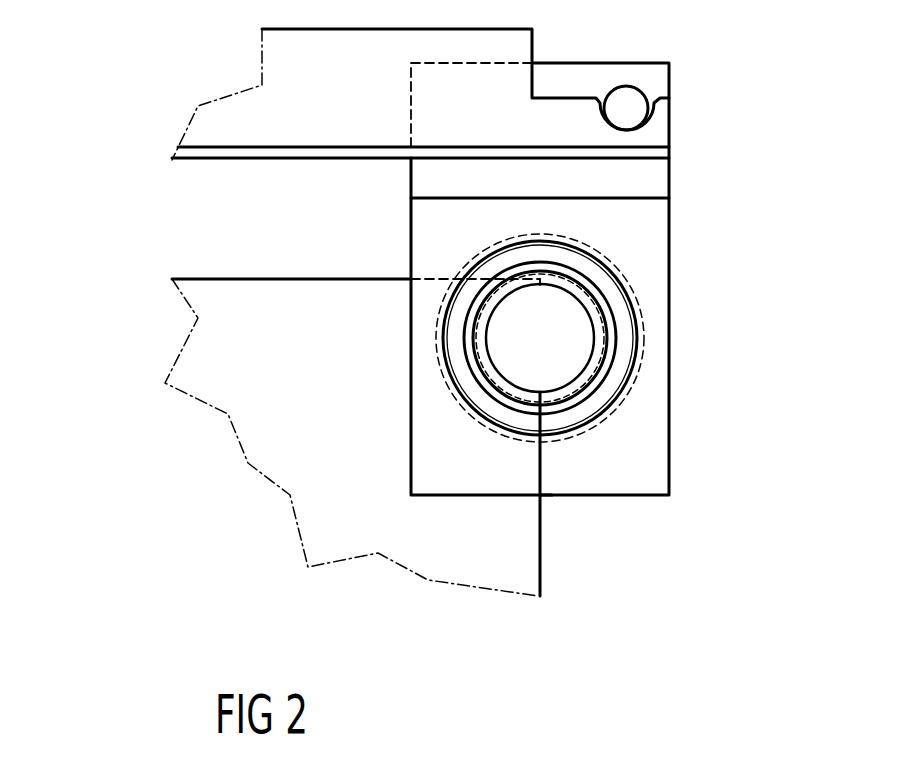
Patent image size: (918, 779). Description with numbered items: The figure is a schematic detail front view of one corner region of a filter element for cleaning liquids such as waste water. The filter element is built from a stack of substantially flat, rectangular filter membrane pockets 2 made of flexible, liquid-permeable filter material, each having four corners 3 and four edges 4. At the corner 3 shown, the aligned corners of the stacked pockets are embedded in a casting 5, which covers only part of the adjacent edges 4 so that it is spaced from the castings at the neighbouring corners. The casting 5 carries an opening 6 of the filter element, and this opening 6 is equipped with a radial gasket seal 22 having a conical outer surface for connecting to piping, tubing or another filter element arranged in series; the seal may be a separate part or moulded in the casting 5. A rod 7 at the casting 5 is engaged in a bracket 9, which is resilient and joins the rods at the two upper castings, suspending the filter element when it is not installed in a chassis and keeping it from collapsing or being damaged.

The filter membrane pocket 2 is at (223, 393).
The corner 3 is at (548, 500).
The edge 4 is at (195, 278).
The casting 5 is at (658, 463).
The opening 6 is at (582, 337).
The rod 7 is at (647, 95).
The bracket 9 is at (283, 66).
The radial gasket seal 22 is at (623, 360).